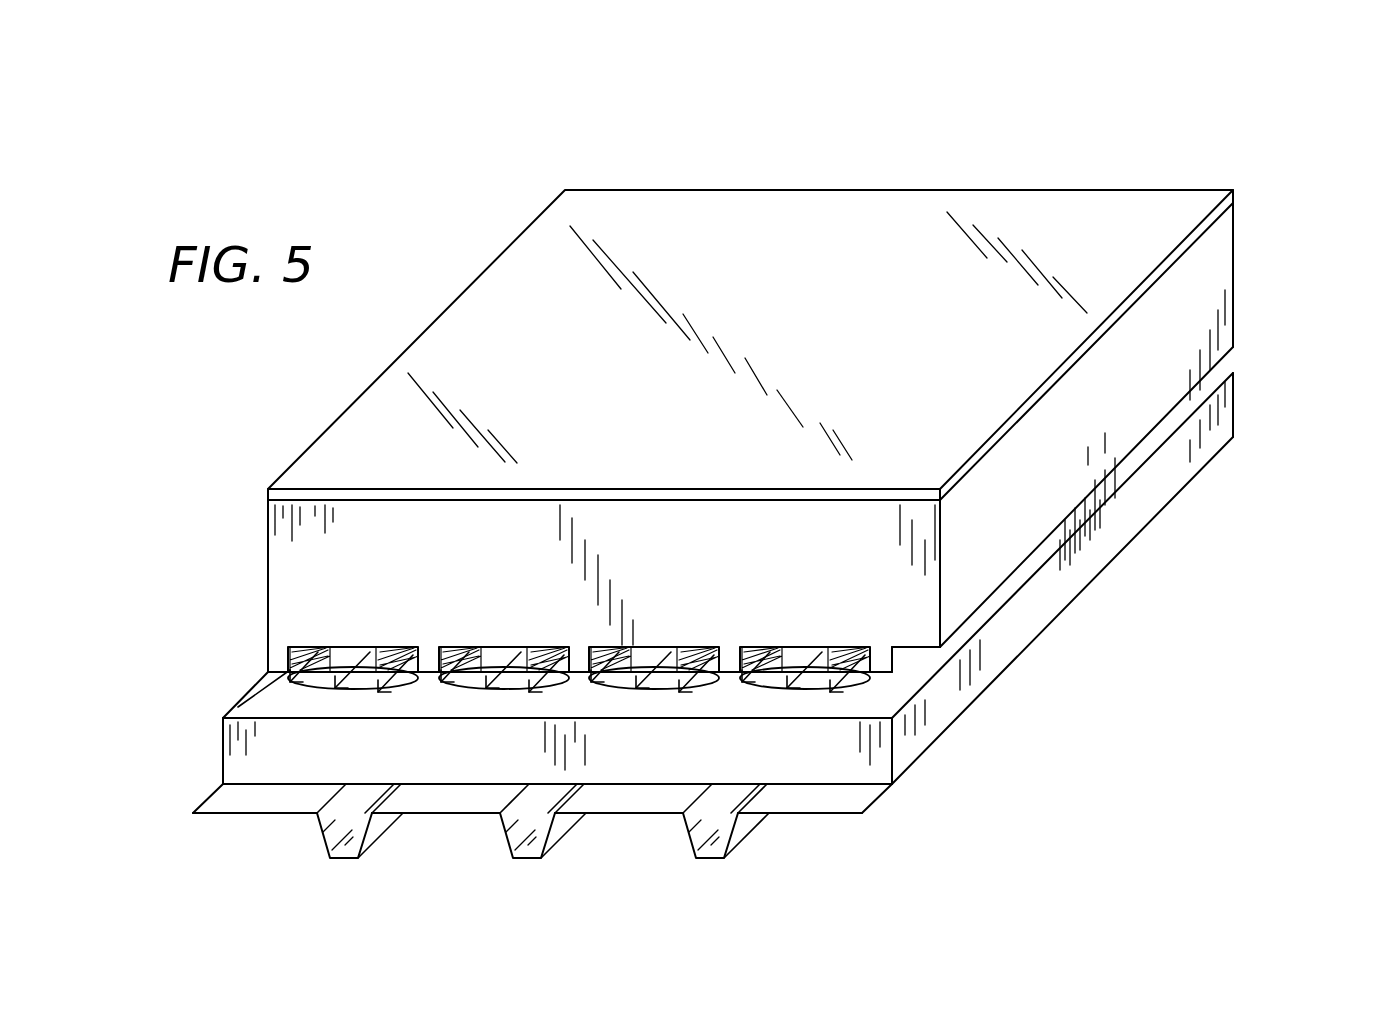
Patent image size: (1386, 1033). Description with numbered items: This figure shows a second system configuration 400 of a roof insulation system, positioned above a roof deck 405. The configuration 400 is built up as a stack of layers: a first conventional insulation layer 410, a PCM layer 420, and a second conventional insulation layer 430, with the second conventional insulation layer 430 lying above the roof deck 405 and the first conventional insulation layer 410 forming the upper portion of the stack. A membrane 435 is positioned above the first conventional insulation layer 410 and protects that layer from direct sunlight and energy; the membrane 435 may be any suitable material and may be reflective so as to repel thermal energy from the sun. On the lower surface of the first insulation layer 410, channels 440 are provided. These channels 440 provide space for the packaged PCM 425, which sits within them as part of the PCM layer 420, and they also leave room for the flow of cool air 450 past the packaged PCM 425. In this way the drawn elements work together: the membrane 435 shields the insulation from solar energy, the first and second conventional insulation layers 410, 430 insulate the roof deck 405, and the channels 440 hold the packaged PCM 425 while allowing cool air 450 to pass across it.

The second system configuration 400 is at (1125, 150).
The membrane 435 is at (1103, 283).
The first conventional insulation layer 410 is at (1107, 437).
The channels 440 is at (300, 650).
The PCM layer 420 is at (450, 655).
The flow of cool air 450 is at (863, 697).
The packaged PCM 425 is at (288, 676).
The second conventional insulation layer 430 is at (1052, 593).
The roof deck 405 is at (757, 828).